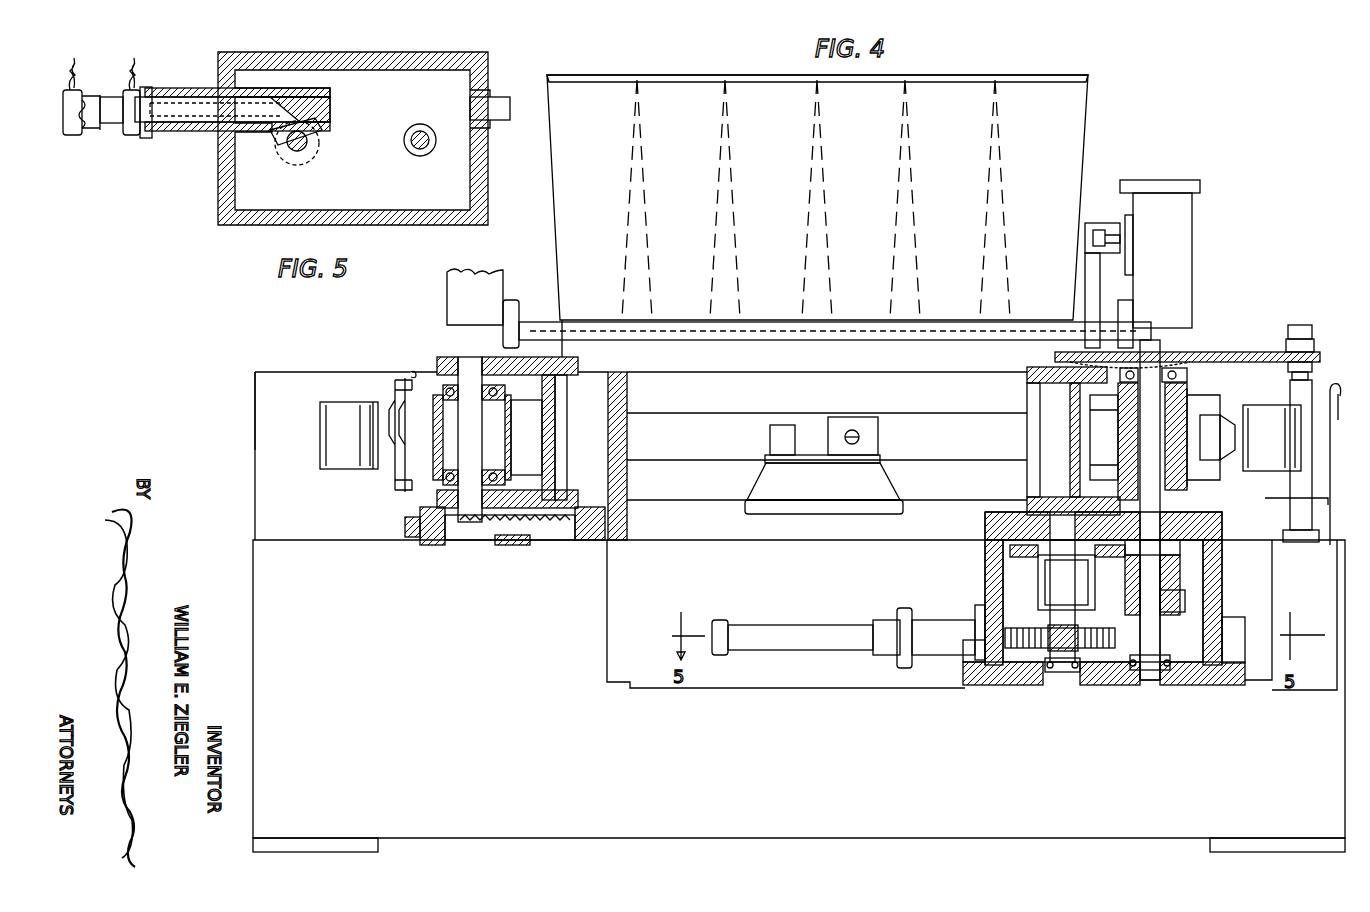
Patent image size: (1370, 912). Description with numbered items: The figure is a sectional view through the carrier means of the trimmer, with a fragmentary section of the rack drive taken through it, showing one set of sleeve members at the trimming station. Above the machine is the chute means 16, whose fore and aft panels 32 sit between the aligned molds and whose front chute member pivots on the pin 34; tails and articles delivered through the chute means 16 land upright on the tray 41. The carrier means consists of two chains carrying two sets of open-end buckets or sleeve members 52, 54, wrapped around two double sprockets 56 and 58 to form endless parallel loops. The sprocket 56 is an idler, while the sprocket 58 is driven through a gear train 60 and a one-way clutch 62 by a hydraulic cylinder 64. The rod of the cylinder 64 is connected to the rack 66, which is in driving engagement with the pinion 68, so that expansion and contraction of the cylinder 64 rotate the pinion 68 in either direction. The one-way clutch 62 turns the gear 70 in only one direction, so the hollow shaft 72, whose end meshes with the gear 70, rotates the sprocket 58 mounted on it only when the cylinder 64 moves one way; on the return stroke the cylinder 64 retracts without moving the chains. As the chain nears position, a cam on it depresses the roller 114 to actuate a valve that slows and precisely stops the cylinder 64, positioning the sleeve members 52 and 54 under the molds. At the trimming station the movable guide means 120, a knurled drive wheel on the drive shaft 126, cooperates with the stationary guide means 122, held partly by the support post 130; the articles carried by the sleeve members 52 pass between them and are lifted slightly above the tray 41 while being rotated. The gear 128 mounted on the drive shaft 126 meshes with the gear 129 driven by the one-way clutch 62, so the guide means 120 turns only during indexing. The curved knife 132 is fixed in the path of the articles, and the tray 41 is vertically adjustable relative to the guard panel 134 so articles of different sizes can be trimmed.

In FIG. 4, the chute means 16 is at (1101, 137).
In FIG. 4, the fore and aft panels 32 is at (1030, 140).
In FIG. 4, the pin 34 is at (1012, 340).
In FIG. 4, the tray 41 is at (1265, 498).
In FIG. 4, the sleeve members 52 is at (1302, 455).
In FIG. 4, the sleeve members 54 is at (318, 435).
In FIG. 4, the sprocket 56 is at (437, 440).
In FIG. 4, the sprocket 58 is at (1075, 440).
In FIG. 4, the gear train 60 is at (1005, 558).
In FIG. 4, the one-way clutch 62 is at (1038, 580).
In FIG. 5, the hydraulic cylinder 64 is at (88, 137).
In FIG. 4, the hydraulic cylinder 64 is at (810, 628).
In FIG. 5, the rack 66 is at (330, 110).
In FIG. 4, the rack 66 is at (1040, 660).
In FIG. 5, the pinion 68 is at (310, 152).
In FIG. 4, the pinion 68 is at (1090, 653).
In FIG. 4, the gear 70 is at (985, 527).
In FIG. 4, the hollow shaft 72 is at (1189, 577).
In FIG. 4, the roller 114 is at (862, 437).
In FIG. 4, the movable guide means 120 is at (1188, 352).
In FIG. 4, the stationary guide means 122 is at (1310, 374).
In FIG. 5, the drive shaft 126 is at (424, 158).
In FIG. 4, the drive shaft 126 is at (1150, 642).
In FIG. 4, the gear 128 is at (1185, 605).
In FIG. 4, the gear 129 is at (1010, 600).
In FIG. 4, the support post 130 is at (1313, 385).
In FIG. 4, the curved knife 132 is at (1228, 433).
In FIG. 4, the guard panel 134 is at (1333, 432).